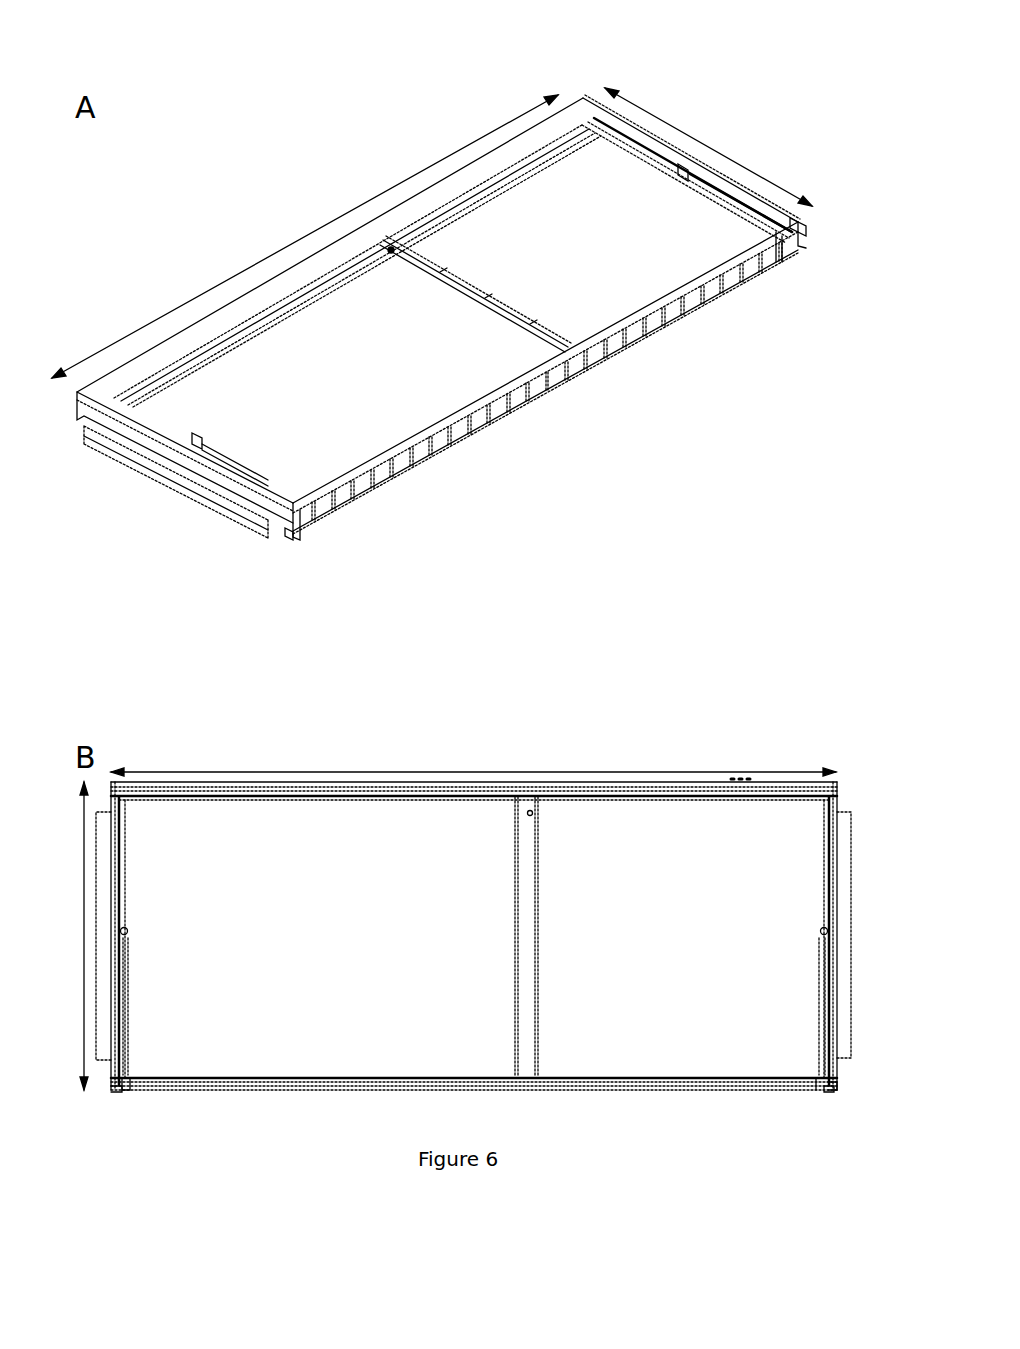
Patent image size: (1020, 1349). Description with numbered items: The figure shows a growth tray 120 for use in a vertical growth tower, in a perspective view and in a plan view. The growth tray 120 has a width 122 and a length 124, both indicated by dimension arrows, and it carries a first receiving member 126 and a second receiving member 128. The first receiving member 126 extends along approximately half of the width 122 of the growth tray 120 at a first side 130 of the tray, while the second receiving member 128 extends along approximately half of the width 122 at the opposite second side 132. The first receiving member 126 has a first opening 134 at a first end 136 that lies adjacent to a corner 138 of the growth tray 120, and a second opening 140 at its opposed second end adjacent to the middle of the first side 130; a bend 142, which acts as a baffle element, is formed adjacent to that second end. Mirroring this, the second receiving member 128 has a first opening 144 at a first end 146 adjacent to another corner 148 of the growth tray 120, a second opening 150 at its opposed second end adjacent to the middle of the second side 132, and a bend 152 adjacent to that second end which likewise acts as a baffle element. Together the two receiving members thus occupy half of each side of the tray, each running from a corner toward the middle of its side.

The growth tray 120 is at (753, 457).
The width 122 is at (690, 136).
The length 124 is at (305, 215).
The first receiving member 126 is at (766, 200).
The second receiving member 128 is at (245, 462).
The first side 130 is at (590, 102).
The second side 132 is at (92, 437).
The first opening 134 is at (801, 230).
The first end 136 is at (775, 262).
The corner 138 is at (800, 246).
The second opening 140 is at (677, 172).
The bend 142 is at (686, 160).
The first opening 144 is at (300, 537).
The first end 146 is at (342, 505).
The corner 148 is at (280, 536).
The second opening 150 is at (192, 438).
The bend 152 is at (200, 445).